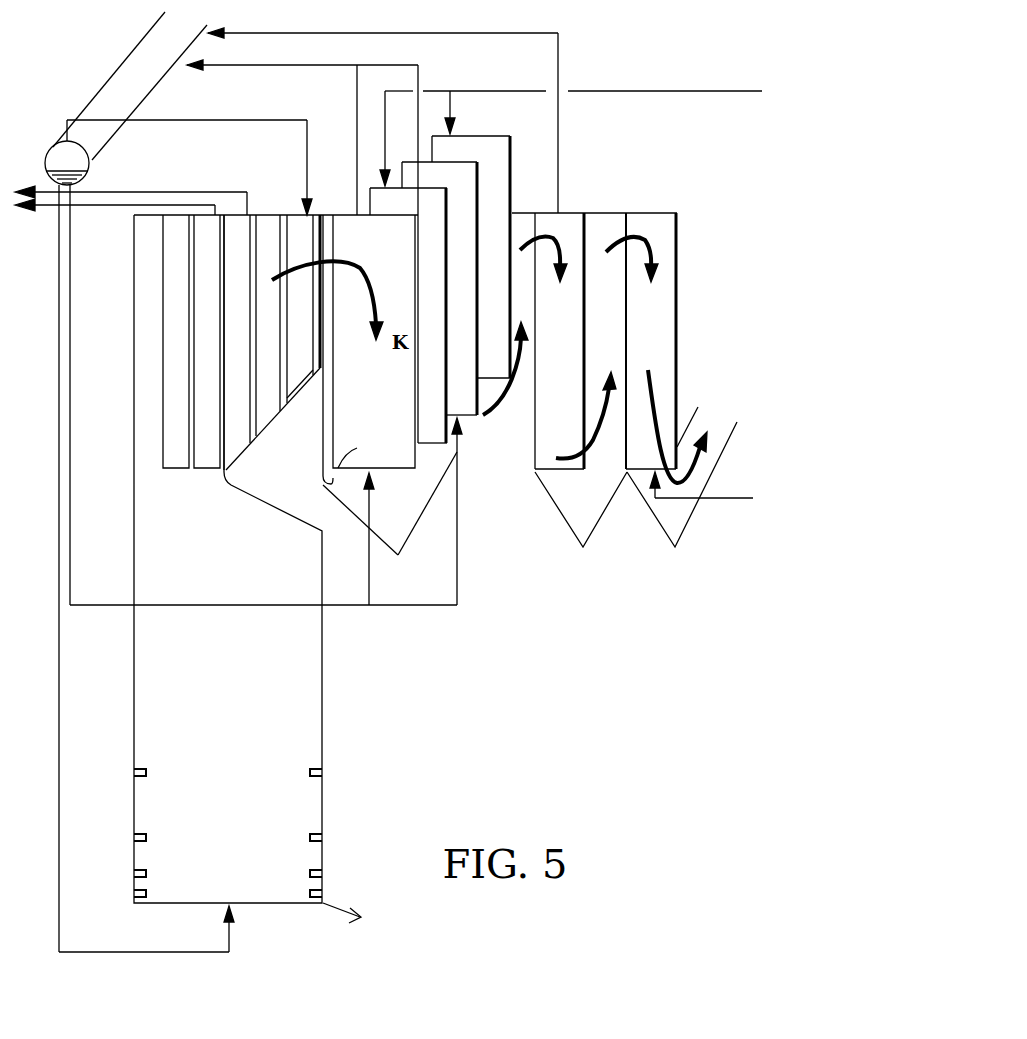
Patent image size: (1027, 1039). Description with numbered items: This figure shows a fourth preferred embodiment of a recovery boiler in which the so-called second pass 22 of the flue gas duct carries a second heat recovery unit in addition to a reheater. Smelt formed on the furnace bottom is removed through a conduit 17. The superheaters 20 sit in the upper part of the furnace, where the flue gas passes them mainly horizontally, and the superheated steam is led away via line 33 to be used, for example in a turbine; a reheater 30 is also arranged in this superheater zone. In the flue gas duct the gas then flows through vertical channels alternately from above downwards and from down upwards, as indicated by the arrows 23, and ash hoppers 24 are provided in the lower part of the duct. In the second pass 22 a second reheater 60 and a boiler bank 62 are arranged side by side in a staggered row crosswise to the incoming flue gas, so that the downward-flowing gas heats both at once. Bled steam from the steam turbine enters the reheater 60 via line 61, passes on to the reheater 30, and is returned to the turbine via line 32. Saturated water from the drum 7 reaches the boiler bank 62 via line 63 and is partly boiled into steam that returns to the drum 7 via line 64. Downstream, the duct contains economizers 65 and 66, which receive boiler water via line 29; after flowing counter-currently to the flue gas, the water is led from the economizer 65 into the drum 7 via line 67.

The drum 7 is at (93, 163).
The conduit 17 is at (333, 907).
The superheaters 20 is at (175, 460).
The second pass 22 is at (324, 422).
The arrows 23 is at (658, 403).
The ash hoppers 24 is at (397, 523).
The line 29 is at (730, 495).
The reheater 30 is at (205, 460).
The line 32 is at (102, 204).
The line 33 is at (216, 189).
The second reheater 60 is at (499, 180).
The line 61 is at (646, 92).
The boiler bank 62 is at (455, 173).
The line 63 is at (354, 605).
The line 64 is at (302, 62).
The economizer 65 is at (563, 222).
The economizer 66 is at (663, 228).
The line 67 is at (558, 64).